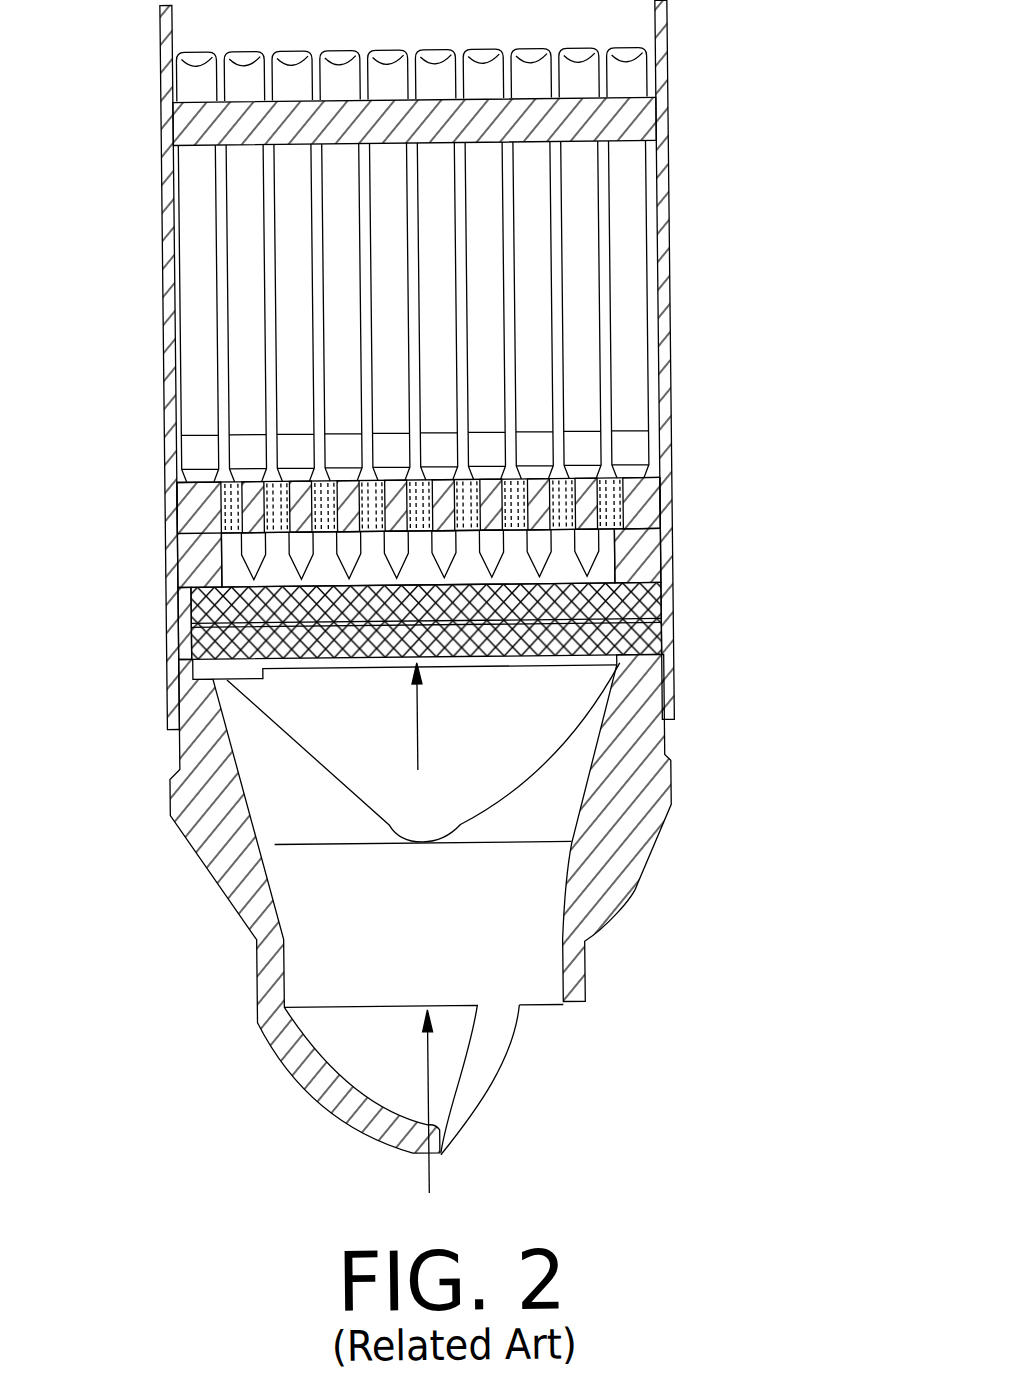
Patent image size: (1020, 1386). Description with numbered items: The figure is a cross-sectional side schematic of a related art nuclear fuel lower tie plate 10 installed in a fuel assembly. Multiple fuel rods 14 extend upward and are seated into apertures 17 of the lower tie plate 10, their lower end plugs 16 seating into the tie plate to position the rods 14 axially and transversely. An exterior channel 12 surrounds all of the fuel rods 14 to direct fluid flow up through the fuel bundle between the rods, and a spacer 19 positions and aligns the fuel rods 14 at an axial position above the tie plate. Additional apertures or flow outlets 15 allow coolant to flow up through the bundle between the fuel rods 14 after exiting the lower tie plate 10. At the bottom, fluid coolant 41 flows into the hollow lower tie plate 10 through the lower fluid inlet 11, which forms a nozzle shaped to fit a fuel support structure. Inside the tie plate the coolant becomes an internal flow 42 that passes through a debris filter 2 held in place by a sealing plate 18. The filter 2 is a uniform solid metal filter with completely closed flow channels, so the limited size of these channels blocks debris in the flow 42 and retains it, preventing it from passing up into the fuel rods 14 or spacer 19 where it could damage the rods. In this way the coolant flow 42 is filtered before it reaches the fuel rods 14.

The debris filter 2 is at (658, 607).
The lower tie plate 10 is at (652, 748).
The fluid inlet 11 is at (530, 999).
The exterior channel 12 is at (670, 232).
The fuel rods 14 is at (588, 183).
The flow holes 15 is at (617, 523).
The lower end plugs 16 is at (246, 541).
The apertures 17 is at (600, 495).
The sealing plate 18 is at (165, 628).
The spacers 19 is at (644, 121).
The fluid coolant 41 is at (422, 1175).
The internal flow 42 is at (414, 718).